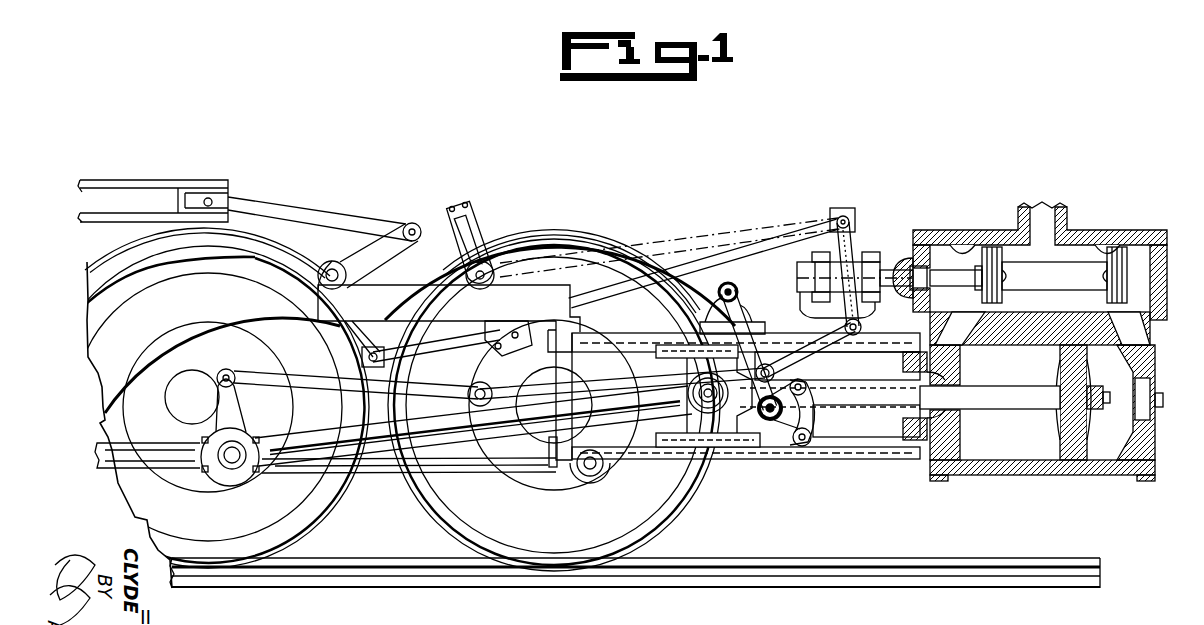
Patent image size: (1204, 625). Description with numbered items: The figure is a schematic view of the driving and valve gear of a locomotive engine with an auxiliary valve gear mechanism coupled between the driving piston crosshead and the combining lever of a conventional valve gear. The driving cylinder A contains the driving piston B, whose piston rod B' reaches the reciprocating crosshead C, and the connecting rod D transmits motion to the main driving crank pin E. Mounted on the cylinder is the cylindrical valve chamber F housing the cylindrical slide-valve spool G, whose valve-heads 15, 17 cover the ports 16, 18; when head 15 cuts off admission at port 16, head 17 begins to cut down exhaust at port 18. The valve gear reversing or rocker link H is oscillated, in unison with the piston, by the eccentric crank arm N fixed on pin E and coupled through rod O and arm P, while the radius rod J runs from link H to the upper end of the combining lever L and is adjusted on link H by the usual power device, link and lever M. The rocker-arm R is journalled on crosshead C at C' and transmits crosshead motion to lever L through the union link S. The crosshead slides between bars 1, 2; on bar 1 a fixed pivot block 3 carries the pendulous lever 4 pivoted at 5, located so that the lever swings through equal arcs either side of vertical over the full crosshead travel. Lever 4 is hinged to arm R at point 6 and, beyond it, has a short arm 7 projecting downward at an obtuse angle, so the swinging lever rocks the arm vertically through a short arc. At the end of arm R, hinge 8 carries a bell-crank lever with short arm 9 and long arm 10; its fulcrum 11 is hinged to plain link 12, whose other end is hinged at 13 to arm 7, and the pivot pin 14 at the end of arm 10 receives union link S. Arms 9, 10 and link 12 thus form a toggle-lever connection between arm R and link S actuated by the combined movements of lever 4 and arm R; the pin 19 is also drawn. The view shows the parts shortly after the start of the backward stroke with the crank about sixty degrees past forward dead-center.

The driving cylinder A is at (1018, 468).
The driving piston B is at (1070, 402).
The piston rod B' is at (990, 384).
The crosshead C is at (708, 417).
The journal of rocker-arm on crosshead C' is at (708, 400).
The connecting rod D is at (378, 466).
The main driving crank pin E is at (231, 463).
The cylindrical valve chamber F is at (1092, 233).
The cylindrical slide-valve spool G is at (1054, 279).
The valve gear reversing or rocker link H is at (472, 212).
The radius rod J is at (725, 253).
The combining lever L is at (855, 230).
The power device, link and lever M is at (226, 202).
The eccentric crank arm N is at (244, 404).
The rod O is at (317, 380).
The arm P is at (500, 362).
The rocker-arm R is at (737, 428).
The union link S is at (832, 338).
The bar 1 is at (873, 347).
The bar 2 is at (870, 447).
The fixed pivot block 3 is at (745, 326).
The pendulous lever 4 is at (752, 344).
The pivot 5 is at (733, 290).
The hinge point 6 is at (772, 420).
The short arm 7 is at (787, 420).
The hinge 8 is at (812, 411).
The short arm of bell-crank lever 9 is at (812, 397).
The long arm of bell-crank lever 10 is at (775, 375).
The fulcrum point 11 is at (807, 386).
The plain link 12 is at (813, 421).
The hinge 13 is at (807, 443).
The pivot pin 14 is at (776, 350).
The valve-head 15 is at (1118, 246).
The port 16 is at (1152, 334).
The valve-head 17 is at (996, 245).
The port 18 is at (966, 330).
The link pin 19 is at (860, 328).